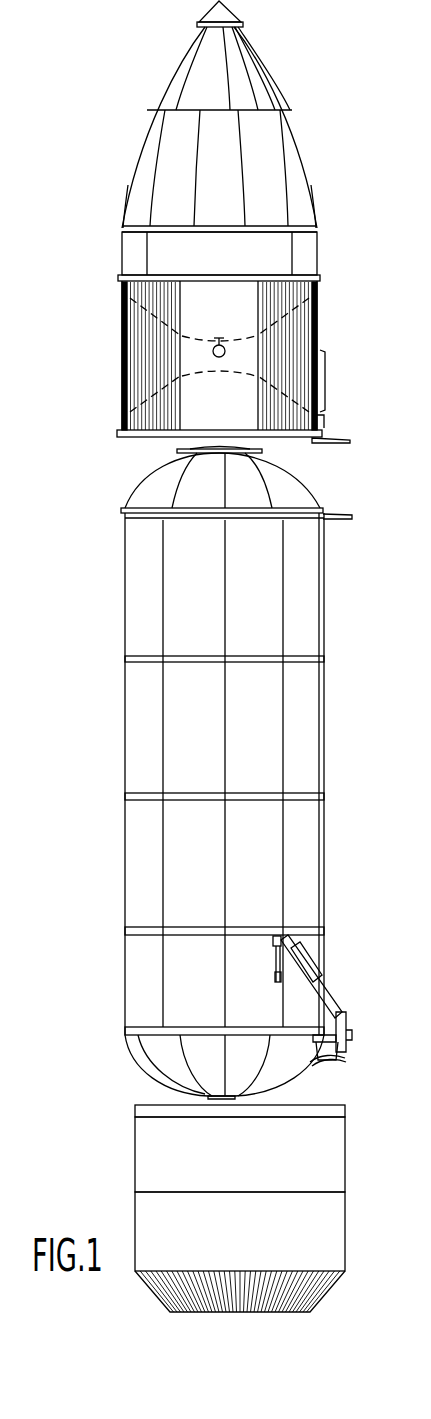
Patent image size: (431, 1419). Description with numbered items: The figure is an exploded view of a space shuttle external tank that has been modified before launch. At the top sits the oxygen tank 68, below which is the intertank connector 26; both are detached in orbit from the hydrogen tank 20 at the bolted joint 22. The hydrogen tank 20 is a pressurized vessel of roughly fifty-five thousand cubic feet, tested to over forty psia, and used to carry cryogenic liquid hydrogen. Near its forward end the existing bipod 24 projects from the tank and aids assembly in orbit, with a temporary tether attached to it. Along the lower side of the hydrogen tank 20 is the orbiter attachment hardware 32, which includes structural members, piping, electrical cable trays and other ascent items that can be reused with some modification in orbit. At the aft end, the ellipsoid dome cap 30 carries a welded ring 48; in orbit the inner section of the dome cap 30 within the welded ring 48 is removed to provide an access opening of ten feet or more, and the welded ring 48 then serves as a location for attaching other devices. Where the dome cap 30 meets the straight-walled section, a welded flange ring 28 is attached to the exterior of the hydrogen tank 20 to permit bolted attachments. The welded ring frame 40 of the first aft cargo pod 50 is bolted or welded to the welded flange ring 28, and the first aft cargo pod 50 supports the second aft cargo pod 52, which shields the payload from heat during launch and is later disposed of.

The hydrogen tank 20 is at (312, 740).
The bolted joint 22 is at (305, 500).
The bipod 24 is at (338, 522).
The intertank connector 26 is at (320, 320).
The welded flange ring 28 is at (292, 1012).
The dome cap 30 is at (155, 1063).
The orbiter attachment hardware 32 is at (343, 1005).
The welded ring frame 40 is at (345, 1106).
The welded ring 48 is at (285, 1093).
The first aft cargo pod 50 is at (328, 1162).
The second aft cargo pod 52 is at (328, 1235).
The oxygen tank 68 is at (295, 180).